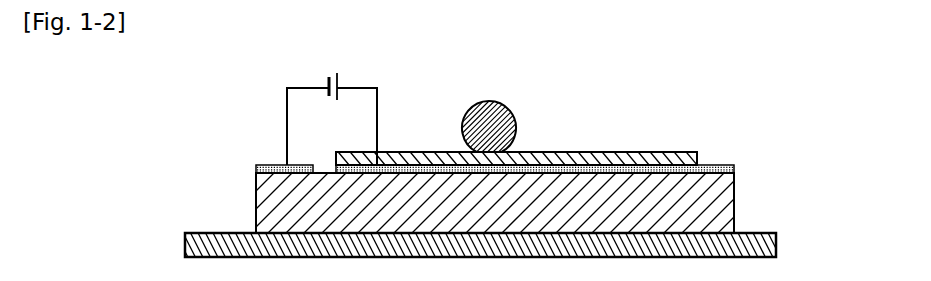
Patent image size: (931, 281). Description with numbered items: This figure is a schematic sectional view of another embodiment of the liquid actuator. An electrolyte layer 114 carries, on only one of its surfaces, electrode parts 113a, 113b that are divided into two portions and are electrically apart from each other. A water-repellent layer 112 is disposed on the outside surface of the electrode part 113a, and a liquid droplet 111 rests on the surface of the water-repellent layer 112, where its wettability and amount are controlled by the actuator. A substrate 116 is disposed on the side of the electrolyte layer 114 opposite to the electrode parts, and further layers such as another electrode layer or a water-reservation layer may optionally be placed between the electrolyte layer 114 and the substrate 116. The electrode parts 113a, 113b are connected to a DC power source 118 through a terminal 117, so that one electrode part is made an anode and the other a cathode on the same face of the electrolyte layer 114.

The liquid droplet 111 is at (502, 123).
The water-repellent layer 112 is at (618, 153).
The electrode part 113a is at (727, 168).
The electrode part 113b is at (268, 167).
The electrolyte layer 114 is at (725, 197).
The substrate 116 is at (770, 248).
The terminal 117 is at (378, 103).
The DC power source 118 is at (328, 78).